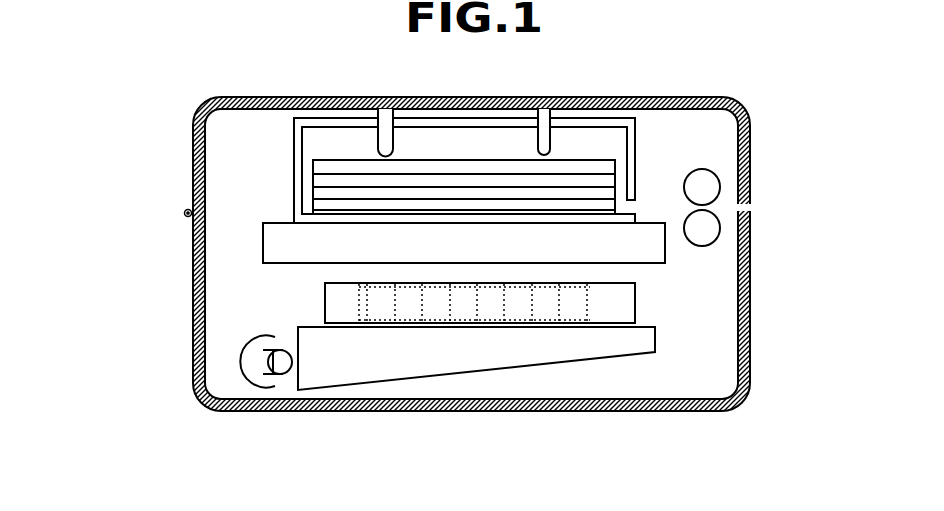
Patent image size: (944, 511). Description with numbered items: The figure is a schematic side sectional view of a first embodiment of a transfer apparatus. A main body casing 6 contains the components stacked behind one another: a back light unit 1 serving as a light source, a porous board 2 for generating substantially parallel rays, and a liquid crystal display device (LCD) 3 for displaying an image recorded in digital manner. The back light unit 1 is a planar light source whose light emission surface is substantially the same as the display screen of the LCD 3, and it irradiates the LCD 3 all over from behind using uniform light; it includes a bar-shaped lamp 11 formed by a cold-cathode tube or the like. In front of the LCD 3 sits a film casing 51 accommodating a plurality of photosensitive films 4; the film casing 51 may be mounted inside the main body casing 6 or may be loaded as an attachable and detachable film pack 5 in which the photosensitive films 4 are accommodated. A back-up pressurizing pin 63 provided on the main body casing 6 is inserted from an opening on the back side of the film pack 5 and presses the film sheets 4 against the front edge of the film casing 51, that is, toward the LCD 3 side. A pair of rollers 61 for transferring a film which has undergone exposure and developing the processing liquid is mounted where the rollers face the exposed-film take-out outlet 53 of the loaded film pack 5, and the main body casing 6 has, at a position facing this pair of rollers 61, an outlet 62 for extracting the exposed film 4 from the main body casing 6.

The back light unit 1 is at (505, 362).
The porous board 2 is at (624, 300).
The liquid crystal display device (LCD) 3 is at (660, 247).
The photosensitive films 4 is at (346, 207).
The film pack 5 is at (266, 192).
The main body casing 6 is at (256, 97).
The bar-shaped lamp 11 is at (240, 372).
The film casing 51 is at (637, 130).
The exposed-film take-out outlet 53 is at (633, 208).
The pair of rollers 61 is at (708, 182).
The outlet 62 is at (752, 208).
The back-up pressurizing pin 63 is at (393, 153).